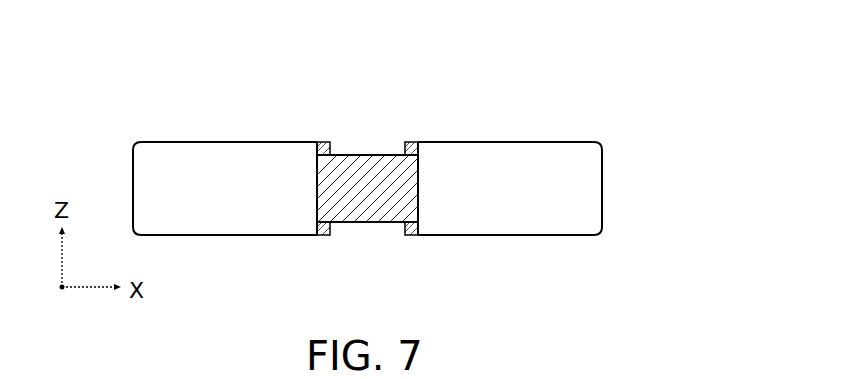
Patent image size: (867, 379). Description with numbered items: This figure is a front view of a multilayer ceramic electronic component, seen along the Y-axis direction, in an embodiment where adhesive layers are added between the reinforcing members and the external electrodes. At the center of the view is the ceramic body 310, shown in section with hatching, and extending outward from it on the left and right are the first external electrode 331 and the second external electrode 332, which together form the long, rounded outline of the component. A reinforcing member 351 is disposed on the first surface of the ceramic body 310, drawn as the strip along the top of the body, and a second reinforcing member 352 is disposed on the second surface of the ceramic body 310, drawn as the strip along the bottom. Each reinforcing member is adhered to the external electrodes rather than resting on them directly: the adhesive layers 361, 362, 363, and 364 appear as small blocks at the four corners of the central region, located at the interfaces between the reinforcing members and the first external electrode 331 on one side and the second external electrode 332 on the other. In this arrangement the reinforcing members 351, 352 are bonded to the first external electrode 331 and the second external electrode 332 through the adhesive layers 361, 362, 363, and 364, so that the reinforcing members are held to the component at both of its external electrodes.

The ceramic body 310 is at (375, 203).
The first external electrode 331 is at (223, 153).
The second external electrode 332 is at (518, 153).
The reinforcing member 351 is at (380, 145).
The reinforcing member 352 is at (350, 237).
The adhesive layer 361 is at (327, 143).
The adhesive layer 362 is at (415, 143).
The adhesive layer 363 is at (322, 240).
The adhesive layer 364 is at (407, 238).